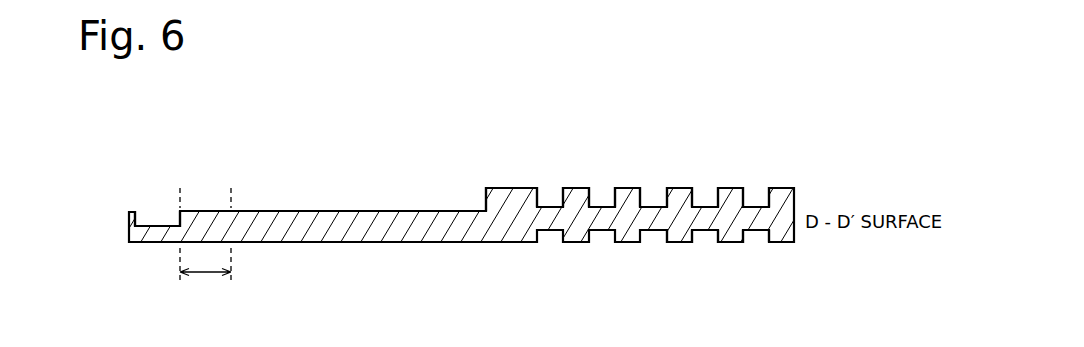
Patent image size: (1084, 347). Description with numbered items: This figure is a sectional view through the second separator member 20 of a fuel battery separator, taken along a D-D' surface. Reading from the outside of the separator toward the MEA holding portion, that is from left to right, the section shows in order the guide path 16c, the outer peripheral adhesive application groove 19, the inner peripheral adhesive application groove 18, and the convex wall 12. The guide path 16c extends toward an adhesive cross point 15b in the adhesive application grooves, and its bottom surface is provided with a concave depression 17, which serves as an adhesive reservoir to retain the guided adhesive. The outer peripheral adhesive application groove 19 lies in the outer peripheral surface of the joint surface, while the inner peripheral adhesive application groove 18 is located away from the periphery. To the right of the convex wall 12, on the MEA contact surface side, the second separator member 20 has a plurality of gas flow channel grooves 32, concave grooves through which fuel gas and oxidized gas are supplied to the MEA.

The convex wall 12 is at (512, 187).
The adhesive cross point 15b is at (207, 293).
The guide path 16c is at (132, 211).
The concave depression 17 is at (160, 225).
The inner peripheral adhesive application groove 18 is at (343, 192).
The outer peripheral adhesive application groove 19 is at (203, 195).
The second separator member 20 is at (732, 163).
The gas flow channel groove 32 is at (602, 195).